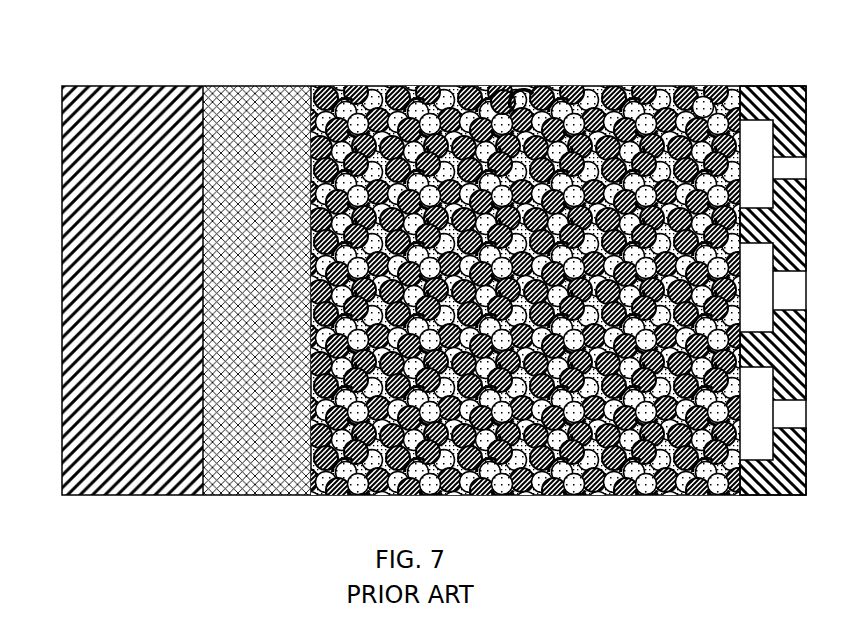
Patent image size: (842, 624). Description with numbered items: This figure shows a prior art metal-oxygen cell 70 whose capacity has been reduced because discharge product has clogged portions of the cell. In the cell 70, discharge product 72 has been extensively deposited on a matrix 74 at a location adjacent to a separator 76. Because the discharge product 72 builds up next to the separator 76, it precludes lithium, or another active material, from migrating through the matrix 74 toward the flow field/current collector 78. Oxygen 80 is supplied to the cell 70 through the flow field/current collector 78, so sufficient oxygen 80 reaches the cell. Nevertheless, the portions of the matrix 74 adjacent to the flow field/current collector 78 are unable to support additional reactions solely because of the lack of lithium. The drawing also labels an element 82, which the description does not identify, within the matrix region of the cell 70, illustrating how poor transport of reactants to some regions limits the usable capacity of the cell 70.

The cell 70 is at (43, 77).
The discharge product 72 is at (520, 90).
The matrix 74 is at (500, 90).
The separator 76 is at (287, 86).
The flow field/current collector 78 is at (745, 86).
The oxygen 80 is at (575, 95).
The conductive particle 82 is at (702, 95).